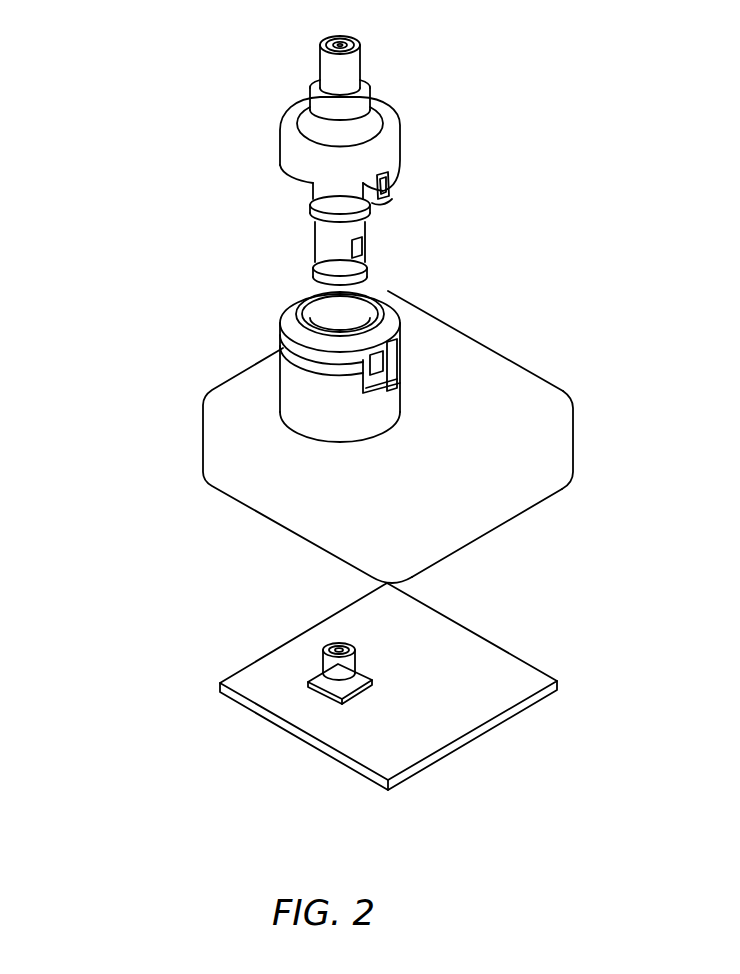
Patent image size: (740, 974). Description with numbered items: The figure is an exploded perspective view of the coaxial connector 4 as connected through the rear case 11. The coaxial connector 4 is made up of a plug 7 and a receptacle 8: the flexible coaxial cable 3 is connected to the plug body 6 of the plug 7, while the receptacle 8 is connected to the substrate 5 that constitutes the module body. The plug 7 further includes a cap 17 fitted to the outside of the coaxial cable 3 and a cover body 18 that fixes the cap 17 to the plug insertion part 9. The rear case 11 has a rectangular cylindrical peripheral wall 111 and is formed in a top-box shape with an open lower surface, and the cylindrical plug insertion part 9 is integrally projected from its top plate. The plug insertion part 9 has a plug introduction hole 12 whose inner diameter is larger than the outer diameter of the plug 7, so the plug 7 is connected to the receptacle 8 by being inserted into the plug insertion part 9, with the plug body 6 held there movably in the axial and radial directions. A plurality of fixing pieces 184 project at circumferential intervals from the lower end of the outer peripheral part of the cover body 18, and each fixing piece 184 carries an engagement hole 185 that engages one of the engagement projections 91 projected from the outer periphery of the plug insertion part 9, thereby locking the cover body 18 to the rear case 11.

The coaxial cable 3 is at (348, 70).
The cap 17 is at (327, 102).
The cover body 18 is at (385, 149).
The engagement hole 185 is at (389, 177).
The fixing piece 184 is at (388, 201).
The plug body 6 is at (327, 197).
The coaxial connector 4 is at (68, 453).
The plug 7 is at (327, 252).
The receptacle 8 is at (318, 652).
The plug insertion part 9 is at (405, 328).
The plug introduction hole 12 is at (357, 308).
The engagement projection 91 is at (400, 353).
The rear case 11 is at (558, 432).
The peripheral wall 111 is at (527, 383).
The substrate 5 is at (512, 685).